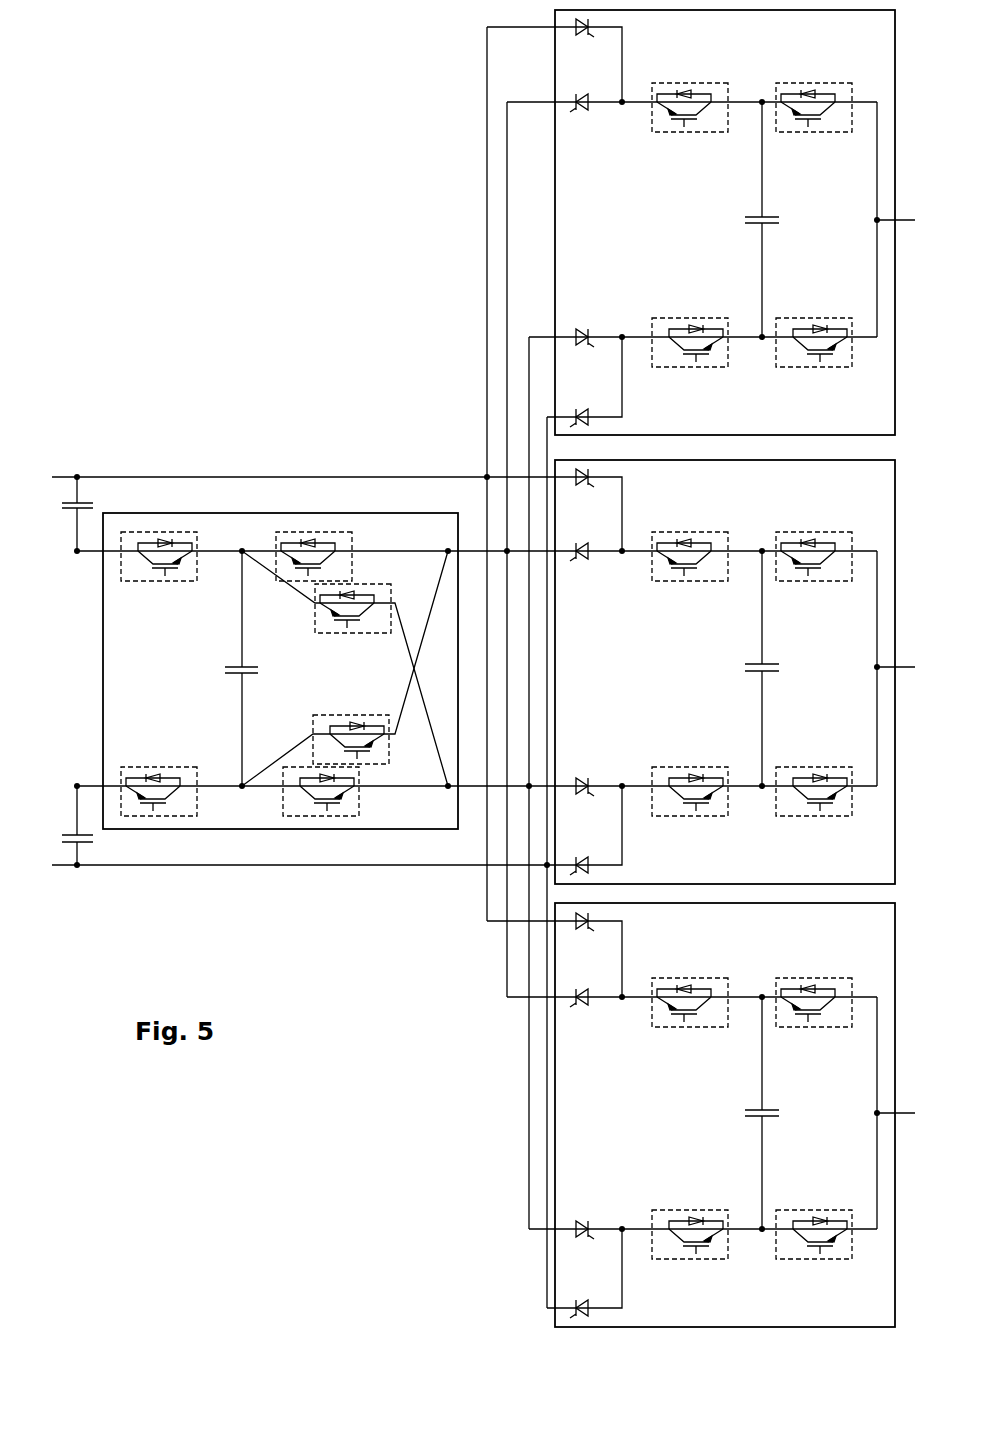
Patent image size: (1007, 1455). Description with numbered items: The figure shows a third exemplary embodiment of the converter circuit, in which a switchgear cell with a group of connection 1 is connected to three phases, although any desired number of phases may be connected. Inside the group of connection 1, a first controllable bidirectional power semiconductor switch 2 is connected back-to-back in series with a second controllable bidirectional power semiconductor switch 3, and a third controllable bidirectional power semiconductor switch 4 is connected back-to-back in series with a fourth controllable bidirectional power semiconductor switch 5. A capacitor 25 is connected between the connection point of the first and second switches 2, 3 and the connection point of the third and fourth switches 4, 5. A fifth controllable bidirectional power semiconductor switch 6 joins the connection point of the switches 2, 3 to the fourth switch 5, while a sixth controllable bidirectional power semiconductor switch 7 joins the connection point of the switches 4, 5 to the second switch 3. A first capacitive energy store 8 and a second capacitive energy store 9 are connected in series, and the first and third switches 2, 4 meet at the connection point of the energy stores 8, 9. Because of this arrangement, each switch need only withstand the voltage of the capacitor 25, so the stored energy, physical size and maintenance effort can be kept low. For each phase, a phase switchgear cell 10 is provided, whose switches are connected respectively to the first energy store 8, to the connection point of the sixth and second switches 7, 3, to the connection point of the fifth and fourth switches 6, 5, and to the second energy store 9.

The group of connection 1 is at (298, 513).
The first controllable bidirectional power semiconductor switch 2 is at (148, 532).
The second controllable bidirectional power semiconductor switch 3 is at (345, 532).
The third controllable bidirectional power semiconductor switch 4 is at (173, 817).
The fourth controllable bidirectional power semiconductor switch 5 is at (313, 817).
The fifth controllable bidirectional power semiconductor switch 6 is at (383, 583).
The sixth controllable bidirectional power semiconductor switch 7 is at (380, 765).
The first capacitive energy store 8 is at (85, 502).
The second capacitive energy store 9 is at (95, 842).
The phase switchgear cell 10 is at (555, 1053).
The capacitor 25 is at (253, 664).